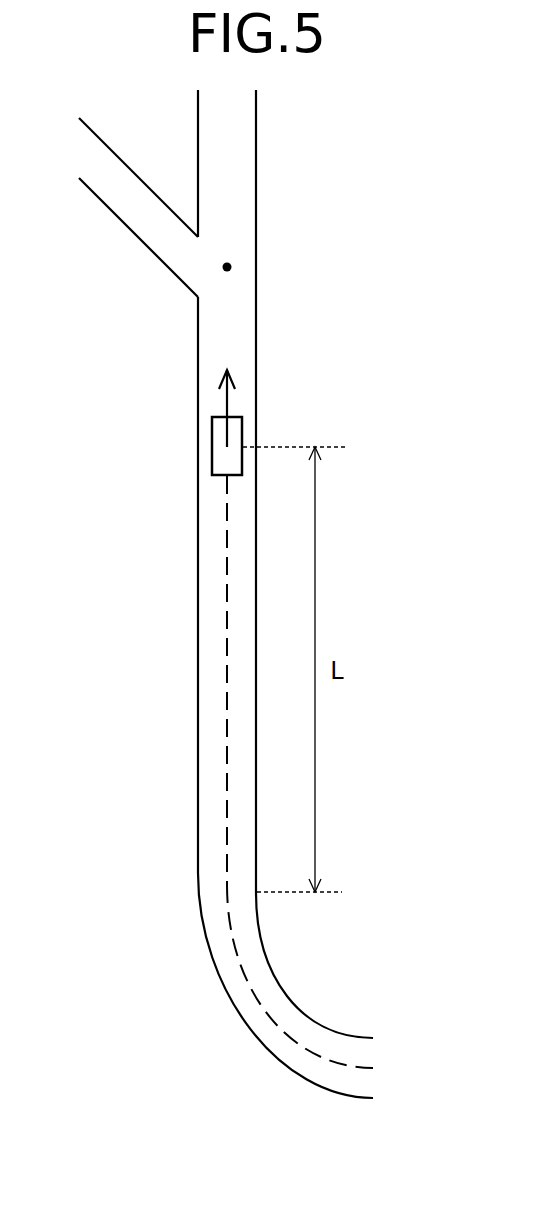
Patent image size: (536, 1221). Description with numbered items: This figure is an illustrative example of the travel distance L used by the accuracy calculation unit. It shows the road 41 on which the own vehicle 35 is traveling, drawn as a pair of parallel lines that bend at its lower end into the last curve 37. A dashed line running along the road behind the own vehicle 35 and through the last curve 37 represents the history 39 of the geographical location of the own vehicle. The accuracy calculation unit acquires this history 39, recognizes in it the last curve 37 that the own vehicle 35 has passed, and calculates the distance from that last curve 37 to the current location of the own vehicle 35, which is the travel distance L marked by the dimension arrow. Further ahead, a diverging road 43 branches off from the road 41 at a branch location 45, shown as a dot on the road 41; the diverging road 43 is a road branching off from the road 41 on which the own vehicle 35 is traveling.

The own vehicle 35 is at (213, 447).
The last curve 37 is at (277, 997).
The history 39 is at (227, 783).
The road 41 is at (242, 223).
The diverging road 43 is at (110, 163).
The branch location 45 is at (231, 267).